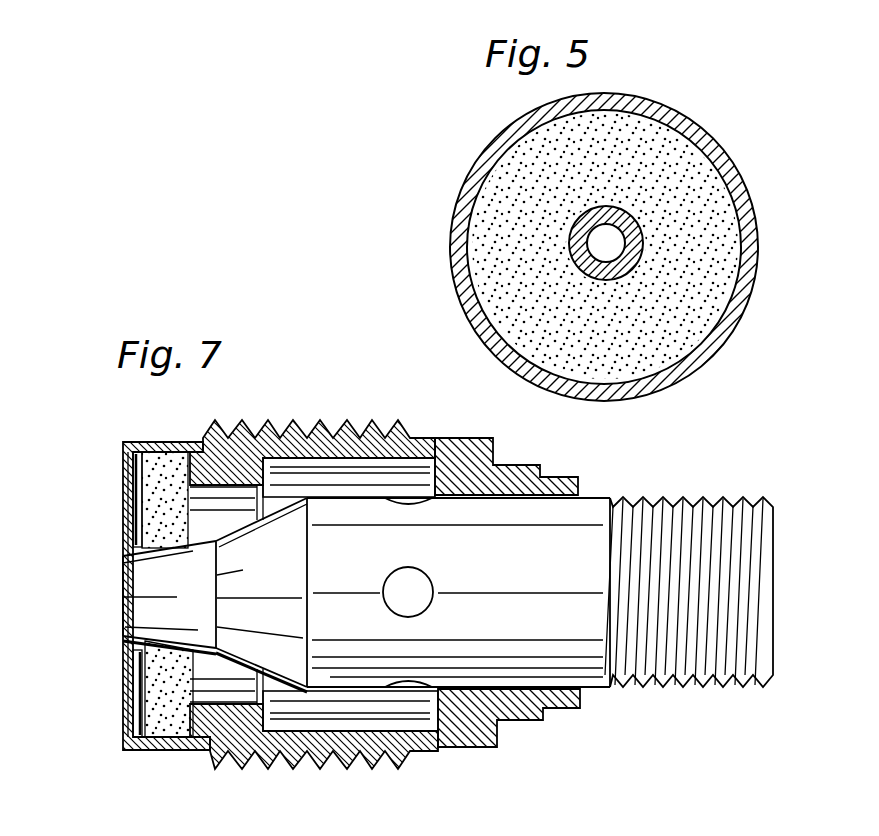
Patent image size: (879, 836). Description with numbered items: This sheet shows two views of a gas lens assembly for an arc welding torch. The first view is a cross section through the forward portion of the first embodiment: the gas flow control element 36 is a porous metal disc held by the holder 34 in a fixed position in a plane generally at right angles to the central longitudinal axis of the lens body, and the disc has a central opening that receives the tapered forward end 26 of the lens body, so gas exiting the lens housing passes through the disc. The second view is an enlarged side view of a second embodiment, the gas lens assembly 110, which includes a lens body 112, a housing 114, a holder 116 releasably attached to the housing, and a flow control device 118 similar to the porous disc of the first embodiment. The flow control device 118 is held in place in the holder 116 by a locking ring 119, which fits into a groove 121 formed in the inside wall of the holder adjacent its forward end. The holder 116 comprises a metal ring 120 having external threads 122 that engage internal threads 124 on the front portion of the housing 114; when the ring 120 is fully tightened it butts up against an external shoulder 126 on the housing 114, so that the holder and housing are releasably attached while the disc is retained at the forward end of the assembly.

In FIG. 5, the tapered forward end 26 is at (637, 262).
In FIG. 5, the holder 34 is at (743, 197).
In FIG. 5, the gas flow control element 36 is at (673, 147).
In FIG. 7, the gas lens assembly 110 is at (314, 404).
In FIG. 7, the lens body 112 is at (583, 512).
In FIG. 7, the housing 114 is at (480, 452).
In FIG. 7, the holder 116 is at (180, 750).
In FIG. 7, the flow control device 118 is at (152, 693).
In FIG. 7, the locking ring 119 is at (125, 477).
In FIG. 7, the metal ring 120 is at (137, 752).
In FIG. 7, the groove 121 is at (137, 442).
In FIG. 7, the external threads 122 is at (236, 433).
In FIG. 7, the internal threads 124 is at (237, 753).
In FIG. 7, the external shoulder 126 is at (200, 750).